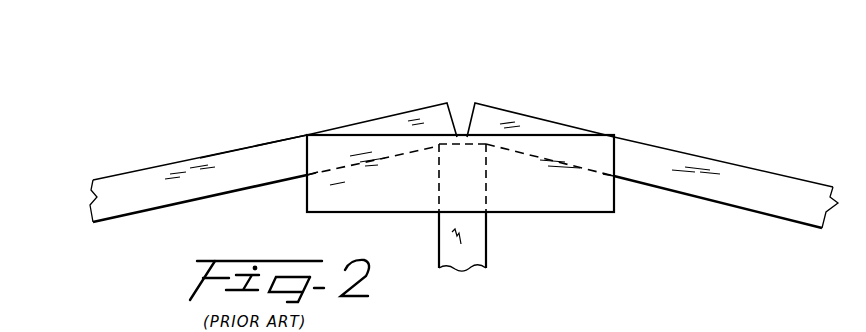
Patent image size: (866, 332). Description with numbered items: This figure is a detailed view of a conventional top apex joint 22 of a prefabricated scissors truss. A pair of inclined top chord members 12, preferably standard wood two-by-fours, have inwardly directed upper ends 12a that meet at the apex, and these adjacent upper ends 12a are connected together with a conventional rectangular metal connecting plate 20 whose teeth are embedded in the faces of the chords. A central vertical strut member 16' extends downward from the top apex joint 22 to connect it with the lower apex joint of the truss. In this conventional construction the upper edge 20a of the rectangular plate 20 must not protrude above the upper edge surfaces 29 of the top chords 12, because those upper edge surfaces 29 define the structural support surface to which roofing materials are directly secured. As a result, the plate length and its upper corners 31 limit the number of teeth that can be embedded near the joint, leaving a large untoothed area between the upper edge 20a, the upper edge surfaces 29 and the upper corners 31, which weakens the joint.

The top chord member 12 is at (130, 187).
The upper end of top chord 12a is at (447, 105).
The central vertical strut member 16' is at (490, 208).
The rectangular metal connecting plate 20 is at (307, 200).
The upper edge of rectangular plate 20a is at (371, 135).
The top apex joint 22 is at (552, 110).
The upper edge surface of top chord 29 is at (252, 153).
The upper corner of rectangular plate 31 is at (618, 136).